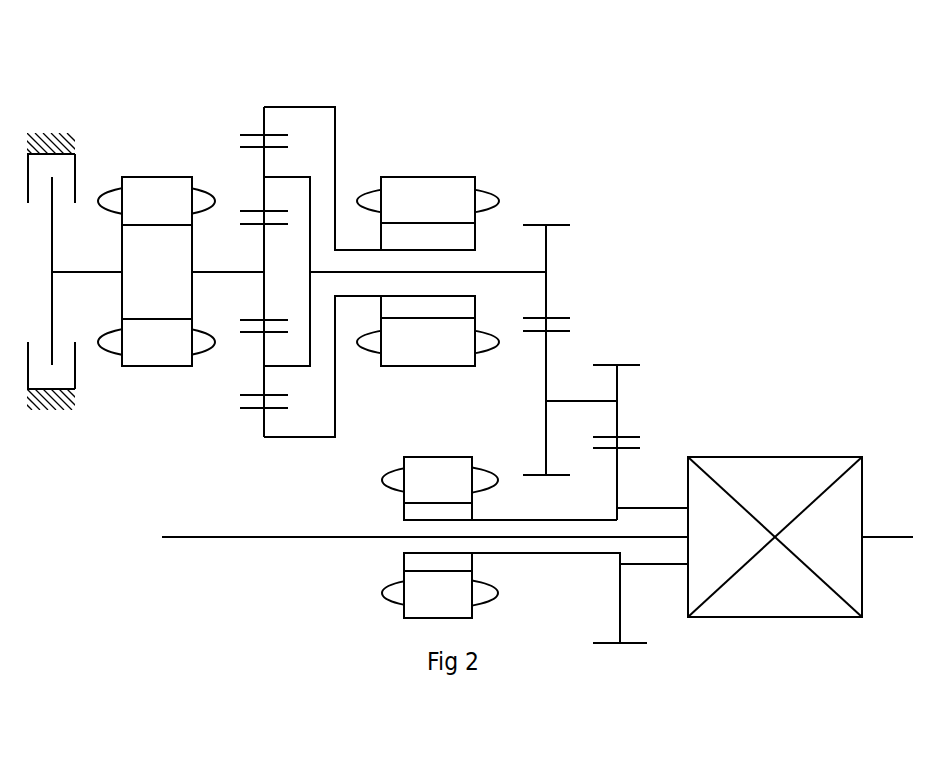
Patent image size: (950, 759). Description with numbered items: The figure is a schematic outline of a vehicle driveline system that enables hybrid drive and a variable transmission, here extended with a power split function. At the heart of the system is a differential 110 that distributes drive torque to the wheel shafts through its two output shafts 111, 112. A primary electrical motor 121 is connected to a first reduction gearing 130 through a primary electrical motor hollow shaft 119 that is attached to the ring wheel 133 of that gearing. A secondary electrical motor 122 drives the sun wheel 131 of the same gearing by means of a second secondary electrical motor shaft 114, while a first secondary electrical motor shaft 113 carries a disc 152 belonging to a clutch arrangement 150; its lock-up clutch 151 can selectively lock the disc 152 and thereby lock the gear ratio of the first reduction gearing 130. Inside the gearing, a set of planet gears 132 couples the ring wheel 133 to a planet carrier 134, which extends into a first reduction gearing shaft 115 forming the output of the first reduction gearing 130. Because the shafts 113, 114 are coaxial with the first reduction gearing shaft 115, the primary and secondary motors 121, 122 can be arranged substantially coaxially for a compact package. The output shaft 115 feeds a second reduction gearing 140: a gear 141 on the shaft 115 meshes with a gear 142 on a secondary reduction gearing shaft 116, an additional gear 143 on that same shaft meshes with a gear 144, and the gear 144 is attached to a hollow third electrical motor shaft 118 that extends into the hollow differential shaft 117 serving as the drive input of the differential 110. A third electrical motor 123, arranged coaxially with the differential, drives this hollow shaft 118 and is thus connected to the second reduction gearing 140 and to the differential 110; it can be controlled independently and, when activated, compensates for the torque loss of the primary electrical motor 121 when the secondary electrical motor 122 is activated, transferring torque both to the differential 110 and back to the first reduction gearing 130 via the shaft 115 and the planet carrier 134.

The differential 110 is at (792, 457).
The output shaft 111 is at (322, 537).
The output shaft 112 is at (892, 537).
The first secondary electrical motor shaft 113 is at (77, 273).
The second secondary electrical motor shaft 114 is at (218, 272).
The first reduction gearing shaft 115 is at (493, 272).
The secondary reduction gearing shaft 116 is at (570, 401).
The hollow differential shaft 117 is at (665, 510).
The hollow third electrical motor shaft 118 is at (558, 553).
The primary electrical motor hollow shaft 119 is at (348, 249).
The primary electrical motor 121 is at (447, 177).
The secondary electrical motor 122 is at (167, 177).
The third electrical motor 123 is at (426, 457).
The first reduction gearing 130 is at (311, 90).
The sun wheel 131 is at (263, 250).
The planet gears 132 is at (263, 197).
The ring wheel 133 is at (263, 437).
The planet carrier 134 is at (303, 177).
The second reduction gearing 140 is at (563, 198).
The gear 141 is at (546, 253).
The gear 142 is at (546, 420).
The gear 143 is at (617, 395).
The gear 144 is at (615, 485).
The clutch arrangement 150 is at (68, 116).
The lock-up clutch 151 is at (75, 374).
The disc 152 is at (50, 260).